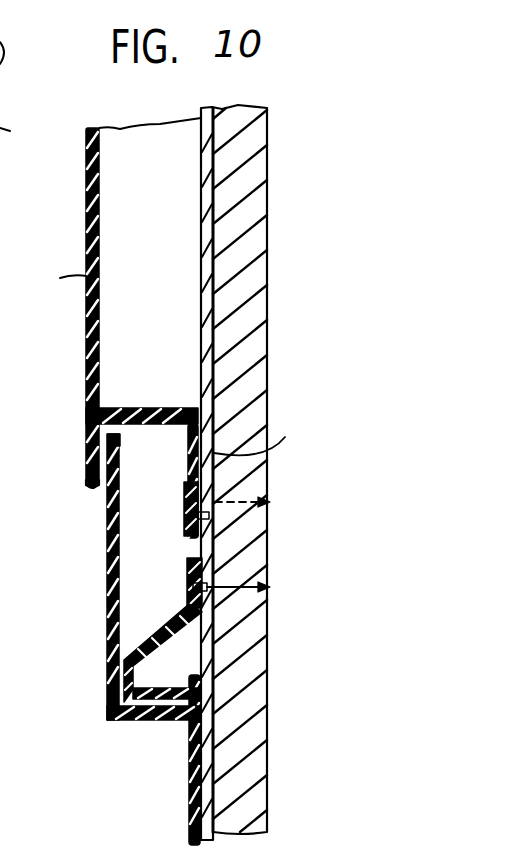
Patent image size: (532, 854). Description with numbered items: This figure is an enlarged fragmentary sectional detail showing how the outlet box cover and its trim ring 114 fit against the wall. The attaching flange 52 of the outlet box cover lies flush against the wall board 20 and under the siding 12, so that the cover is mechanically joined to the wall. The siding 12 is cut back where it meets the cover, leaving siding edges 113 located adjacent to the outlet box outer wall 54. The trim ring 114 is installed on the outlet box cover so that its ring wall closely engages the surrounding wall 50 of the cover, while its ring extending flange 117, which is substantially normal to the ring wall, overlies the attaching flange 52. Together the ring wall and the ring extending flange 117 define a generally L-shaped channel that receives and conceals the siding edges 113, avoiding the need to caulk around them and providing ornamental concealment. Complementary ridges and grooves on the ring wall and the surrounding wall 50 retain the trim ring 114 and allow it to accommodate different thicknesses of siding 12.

The wall board 20 is at (243, 323).
The outlet box outer wall 54 is at (80, 236).
The surrounding wall 50 is at (148, 452).
The attaching flange 52 is at (190, 534).
The siding 12 is at (105, 621).
The siding edges 113 is at (117, 434).
The trim ring 114 is at (76, 481).
The ring extending flange 117 is at (86, 488).